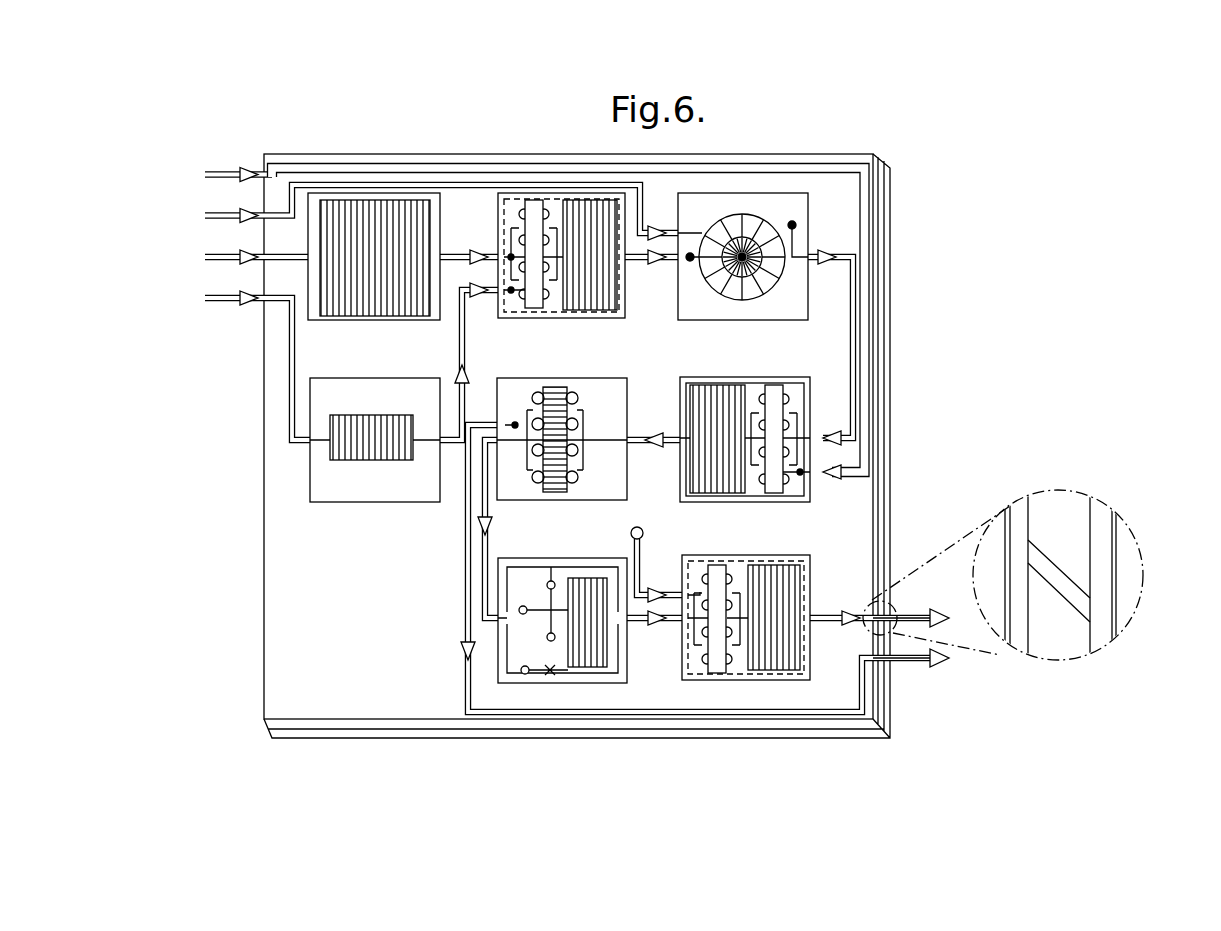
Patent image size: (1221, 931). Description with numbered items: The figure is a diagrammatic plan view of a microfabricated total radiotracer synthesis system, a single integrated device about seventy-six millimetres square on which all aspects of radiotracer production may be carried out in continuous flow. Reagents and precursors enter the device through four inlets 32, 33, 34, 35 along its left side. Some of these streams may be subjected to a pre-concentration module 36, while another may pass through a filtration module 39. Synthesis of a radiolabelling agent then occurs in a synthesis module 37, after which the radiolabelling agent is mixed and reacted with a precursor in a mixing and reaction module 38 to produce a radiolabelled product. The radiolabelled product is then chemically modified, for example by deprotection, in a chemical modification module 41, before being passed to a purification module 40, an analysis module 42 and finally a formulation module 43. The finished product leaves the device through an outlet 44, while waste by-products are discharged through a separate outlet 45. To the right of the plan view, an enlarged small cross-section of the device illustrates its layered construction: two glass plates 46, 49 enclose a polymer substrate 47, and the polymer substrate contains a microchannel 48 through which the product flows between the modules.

The inlet 32 is at (207, 165).
The inlet 33 is at (207, 213).
The inlet 34 is at (207, 262).
The inlet 35 is at (212, 303).
The pre-concentration module 36 is at (372, 321).
The radiolabelling agent synthesis module 37 is at (557, 319).
The mixing and reaction module 38 is at (716, 320).
The filtration module 39 is at (383, 503).
The purification module 40 is at (592, 493).
The chemical modification module 41 is at (752, 489).
The analysis module 42 is at (570, 684).
The formulation module 43 is at (735, 681).
The outlet 44 is at (922, 608).
The outlet 45 is at (921, 669).
The glass plate 46 is at (1016, 520).
The polymer substrate 47 is at (1068, 527).
The microchannel 48 is at (1080, 605).
The glass plate 49 is at (1105, 545).